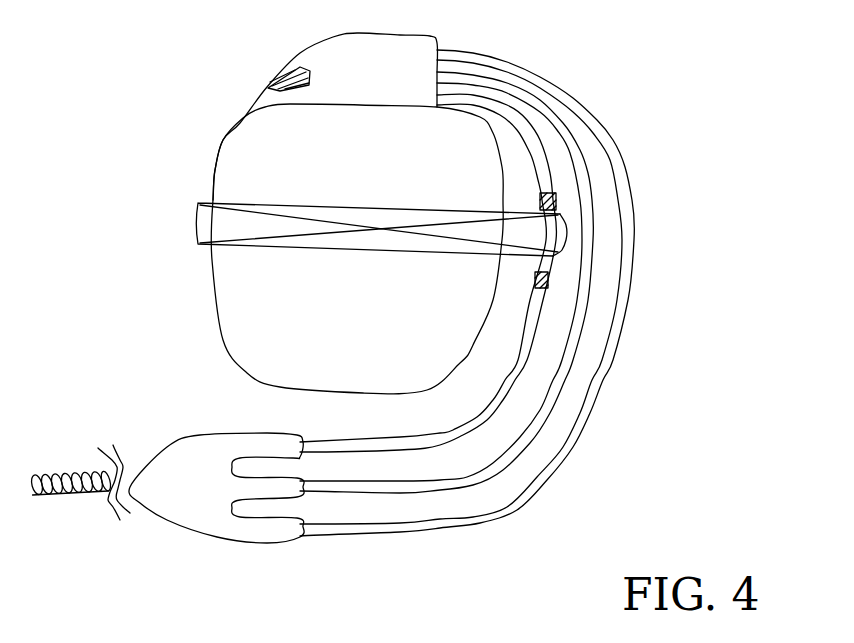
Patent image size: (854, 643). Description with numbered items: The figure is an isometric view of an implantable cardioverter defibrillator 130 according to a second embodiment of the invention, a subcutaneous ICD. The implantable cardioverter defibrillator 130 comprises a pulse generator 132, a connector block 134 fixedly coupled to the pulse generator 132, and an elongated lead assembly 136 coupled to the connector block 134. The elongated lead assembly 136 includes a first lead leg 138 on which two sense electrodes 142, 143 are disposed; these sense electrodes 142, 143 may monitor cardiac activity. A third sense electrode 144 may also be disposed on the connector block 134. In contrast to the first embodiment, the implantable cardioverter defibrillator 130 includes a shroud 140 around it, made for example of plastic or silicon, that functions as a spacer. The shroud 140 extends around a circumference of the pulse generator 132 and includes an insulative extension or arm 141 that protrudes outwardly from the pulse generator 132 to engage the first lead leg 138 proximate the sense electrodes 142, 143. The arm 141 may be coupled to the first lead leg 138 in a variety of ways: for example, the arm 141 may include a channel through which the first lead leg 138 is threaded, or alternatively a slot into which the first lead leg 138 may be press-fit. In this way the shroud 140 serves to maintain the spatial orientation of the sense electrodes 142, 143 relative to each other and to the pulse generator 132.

The implantable cardioverter defibrillator 130 is at (148, 92).
The pulse generator 132 is at (388, 153).
The connector block 134 is at (377, 47).
The elongated lead assembly 136 is at (612, 407).
The first lead leg 138 is at (410, 438).
The shroud 140 is at (205, 208).
The insulative extension or arm 141 is at (560, 242).
The sense electrode 142 is at (542, 198).
The sense electrode 143 is at (537, 283).
The third sense electrode 144 is at (282, 72).